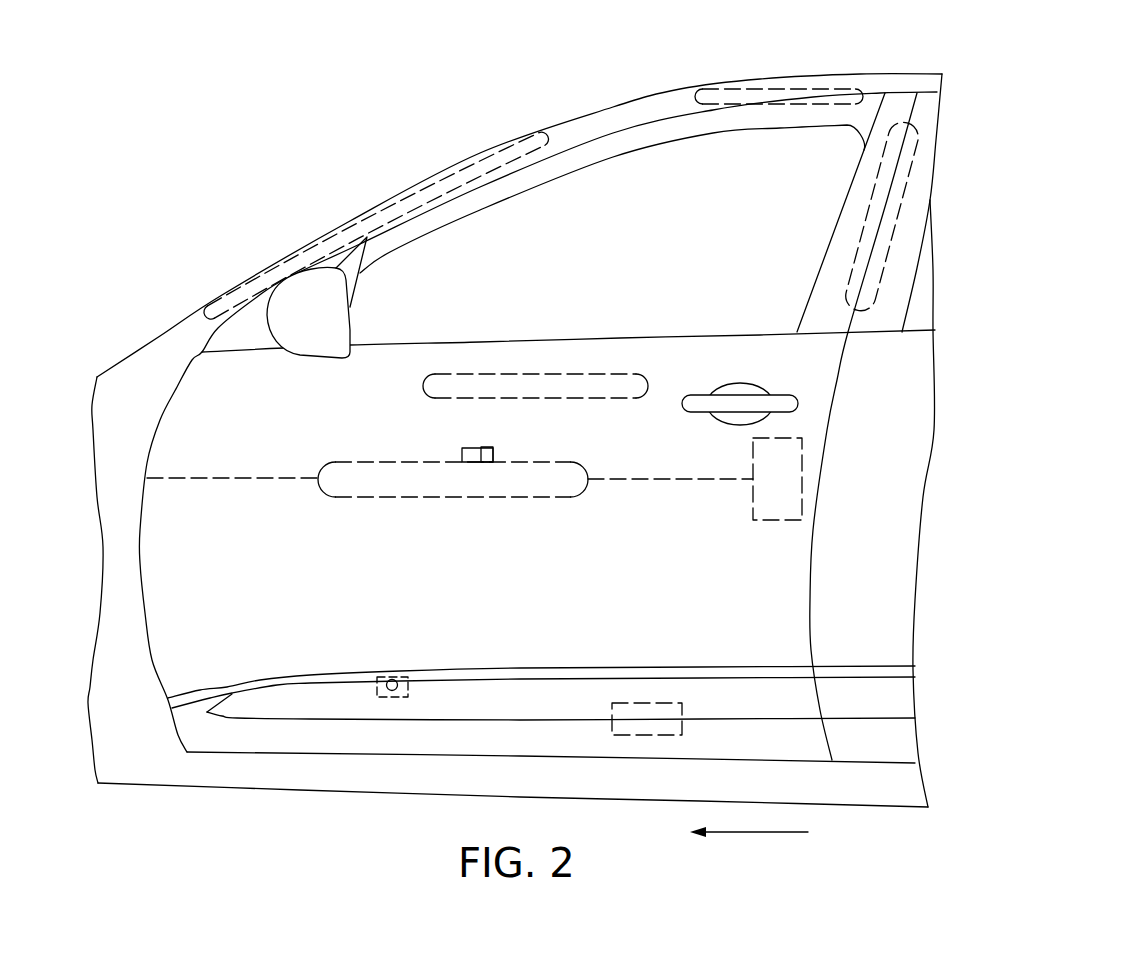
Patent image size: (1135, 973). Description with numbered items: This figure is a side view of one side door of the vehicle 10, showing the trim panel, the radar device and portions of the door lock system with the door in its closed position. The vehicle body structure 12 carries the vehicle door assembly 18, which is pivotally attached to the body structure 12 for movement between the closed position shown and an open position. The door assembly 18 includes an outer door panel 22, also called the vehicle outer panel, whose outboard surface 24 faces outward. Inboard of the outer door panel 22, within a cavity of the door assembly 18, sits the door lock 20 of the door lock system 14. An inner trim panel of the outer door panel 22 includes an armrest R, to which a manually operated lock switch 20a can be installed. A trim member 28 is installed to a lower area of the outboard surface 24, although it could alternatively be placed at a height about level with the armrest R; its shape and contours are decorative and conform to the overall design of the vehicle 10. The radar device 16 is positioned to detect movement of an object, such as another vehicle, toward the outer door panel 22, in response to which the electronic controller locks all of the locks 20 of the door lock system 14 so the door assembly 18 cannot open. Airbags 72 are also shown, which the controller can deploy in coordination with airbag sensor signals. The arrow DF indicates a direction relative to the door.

The vehicle 10 is at (272, 155).
The vehicle body structure 12 is at (600, 104).
The door lock system 14 is at (461, 441).
The radar device 16 is at (657, 702).
The vehicle door assembly 18 is at (178, 385).
The door lock 20 is at (751, 500).
The manually operated lock switch 20a is at (487, 447).
The outer door panel 22 is at (307, 642).
The outboard surface 24 is at (213, 570).
The trim member 28 is at (538, 656).
The airbags 72 is at (418, 193).
The armrest R is at (395, 497).
The forward direction DF is at (748, 833).